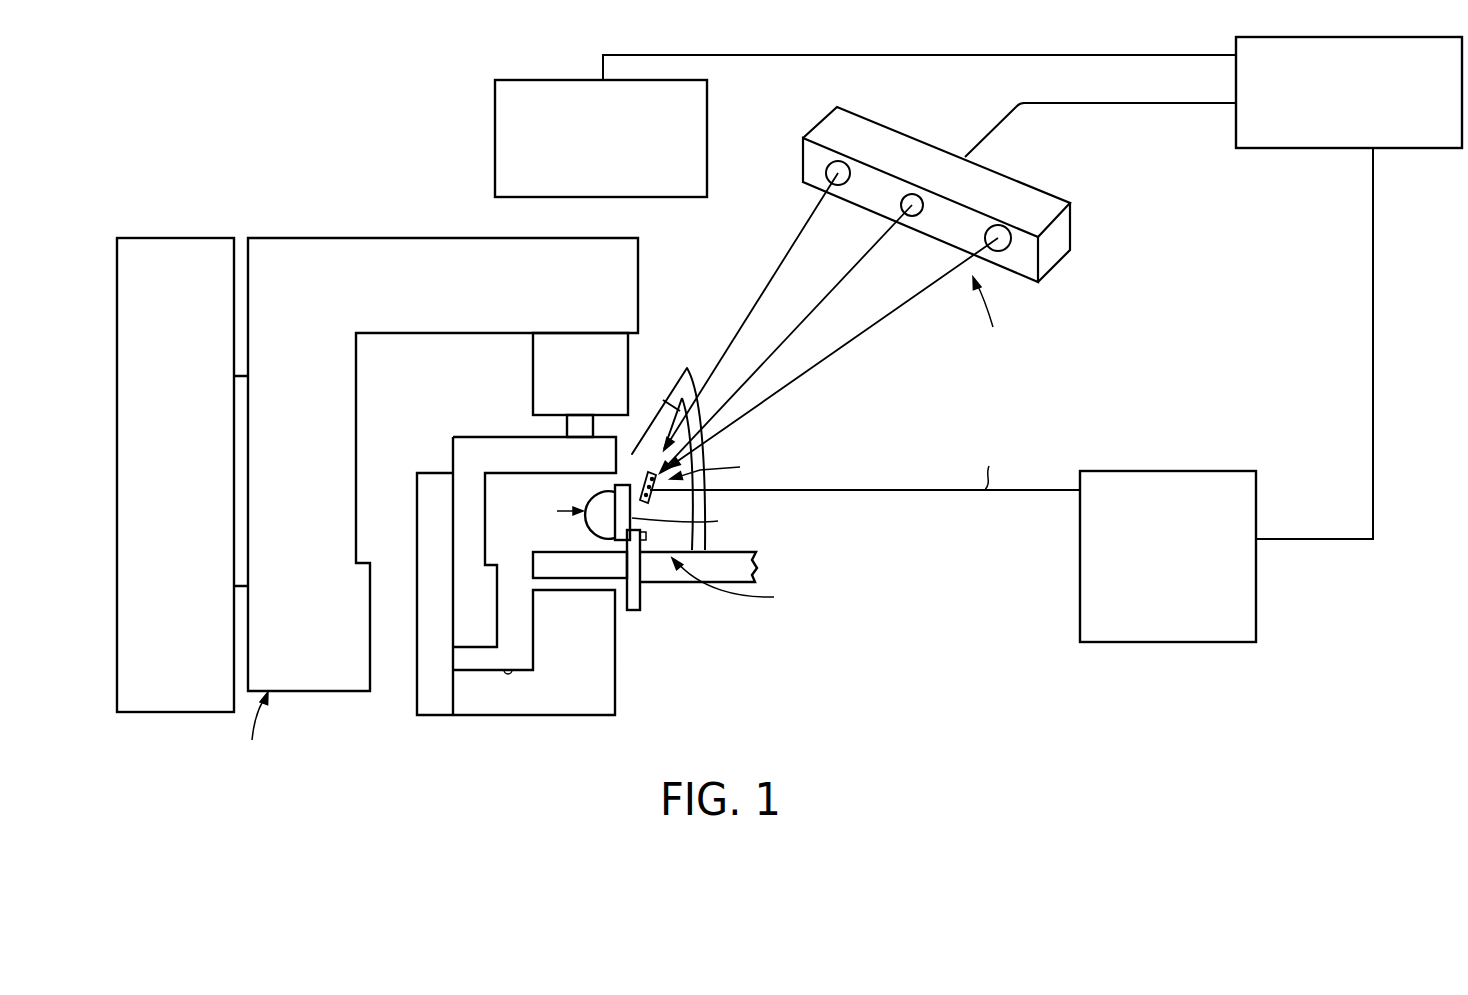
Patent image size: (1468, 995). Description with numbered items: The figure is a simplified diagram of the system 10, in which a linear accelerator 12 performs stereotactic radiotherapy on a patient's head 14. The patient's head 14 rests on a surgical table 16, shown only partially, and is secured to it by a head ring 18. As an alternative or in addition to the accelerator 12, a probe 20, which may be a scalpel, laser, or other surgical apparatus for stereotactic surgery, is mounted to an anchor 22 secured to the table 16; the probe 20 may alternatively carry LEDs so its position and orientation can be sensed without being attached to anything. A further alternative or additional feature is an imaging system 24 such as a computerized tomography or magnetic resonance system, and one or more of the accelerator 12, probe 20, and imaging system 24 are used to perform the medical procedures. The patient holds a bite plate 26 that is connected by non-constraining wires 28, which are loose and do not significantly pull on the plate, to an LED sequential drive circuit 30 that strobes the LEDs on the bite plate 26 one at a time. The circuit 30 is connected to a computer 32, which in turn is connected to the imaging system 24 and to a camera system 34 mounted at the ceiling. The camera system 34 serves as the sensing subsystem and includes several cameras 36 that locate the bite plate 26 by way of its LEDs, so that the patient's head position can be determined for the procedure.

The system 10 is at (963, 775).
The linear accelerator 12 is at (432, 302).
The patient's head 14 is at (600, 518).
The surgical table 16 is at (577, 565).
The head ring 18 is at (614, 491).
The probe 20 is at (647, 410).
The anchor 22 is at (703, 462).
The imaging system 24 is at (495, 176).
The bite plate 26 is at (655, 474).
The non-constraining wires 28 is at (1016, 494).
The LED sequential drive circuit 30 is at (1124, 644).
The computer 32 is at (1262, 130).
The camera system 34 is at (1045, 203).
The cameras 36 is at (988, 236).